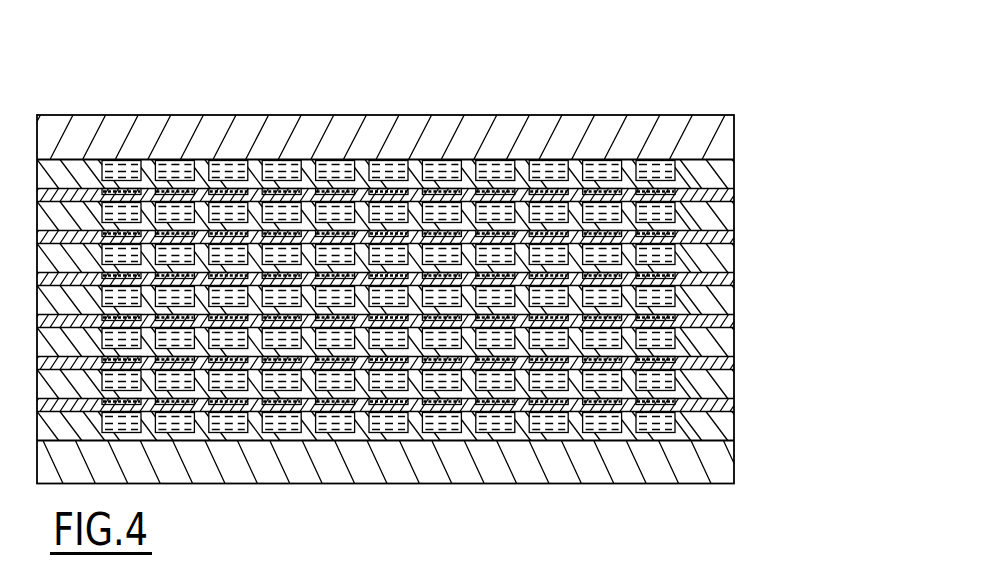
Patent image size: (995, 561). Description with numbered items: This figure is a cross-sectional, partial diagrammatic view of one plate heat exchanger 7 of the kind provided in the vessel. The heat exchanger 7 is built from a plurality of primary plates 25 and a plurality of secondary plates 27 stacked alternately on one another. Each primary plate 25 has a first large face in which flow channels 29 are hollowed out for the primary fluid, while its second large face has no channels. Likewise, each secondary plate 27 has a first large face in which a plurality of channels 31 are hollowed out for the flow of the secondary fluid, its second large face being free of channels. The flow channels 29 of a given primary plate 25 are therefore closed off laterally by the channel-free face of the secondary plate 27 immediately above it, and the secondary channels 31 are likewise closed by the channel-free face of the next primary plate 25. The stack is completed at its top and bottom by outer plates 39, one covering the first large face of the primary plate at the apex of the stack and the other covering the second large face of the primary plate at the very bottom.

The plate heat exchanger 7 is at (394, 242).
The primary plate 25 is at (713, 178).
The secondary plate 27 is at (717, 195).
The flow channel 29 is at (662, 430).
The secondary channel 31 is at (683, 317).
The outer plate 39 is at (187, 132).